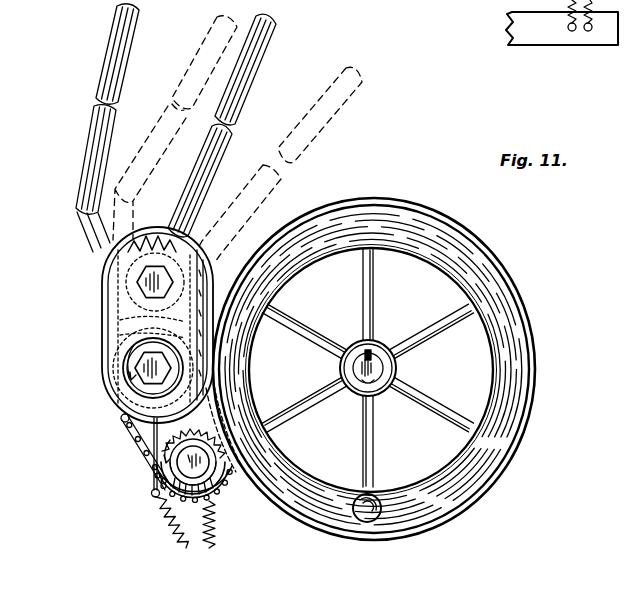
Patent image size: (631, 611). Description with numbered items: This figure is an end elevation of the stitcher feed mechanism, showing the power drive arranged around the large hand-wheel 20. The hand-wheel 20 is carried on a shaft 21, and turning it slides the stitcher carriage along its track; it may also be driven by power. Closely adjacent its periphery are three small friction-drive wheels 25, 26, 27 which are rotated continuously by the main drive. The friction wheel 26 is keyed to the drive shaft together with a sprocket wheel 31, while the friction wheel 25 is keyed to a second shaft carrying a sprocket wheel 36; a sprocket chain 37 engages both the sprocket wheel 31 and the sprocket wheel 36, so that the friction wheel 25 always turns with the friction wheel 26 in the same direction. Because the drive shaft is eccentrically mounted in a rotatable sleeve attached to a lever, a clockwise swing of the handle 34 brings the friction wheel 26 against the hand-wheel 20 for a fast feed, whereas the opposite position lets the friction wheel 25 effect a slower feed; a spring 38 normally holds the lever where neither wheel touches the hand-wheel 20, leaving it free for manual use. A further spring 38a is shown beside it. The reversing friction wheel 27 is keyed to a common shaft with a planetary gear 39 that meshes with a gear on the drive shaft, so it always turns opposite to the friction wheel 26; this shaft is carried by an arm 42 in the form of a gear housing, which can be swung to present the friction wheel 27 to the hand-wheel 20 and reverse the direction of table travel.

The hand-wheel 20 is at (382, 369).
The shaft 21 is at (396, 366).
The friction-drive wheel 25 is at (170, 473).
The friction wheel 26 is at (130, 410).
The reversing friction wheel 27 is at (246, 78).
The sprocket wheel 31 is at (135, 425).
The handle portion 34 is at (125, 36).
The sprocket wheel 36 is at (152, 491).
The sprocket chain 37 is at (137, 442).
The spring 38 is at (218, 533).
The spring 38a is at (170, 534).
The planetary gear 39 is at (148, 240).
The arm 42 is at (145, 305).